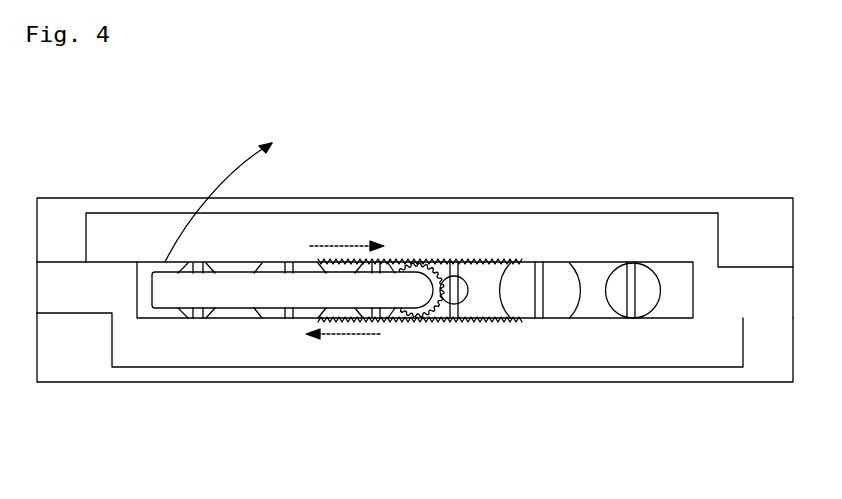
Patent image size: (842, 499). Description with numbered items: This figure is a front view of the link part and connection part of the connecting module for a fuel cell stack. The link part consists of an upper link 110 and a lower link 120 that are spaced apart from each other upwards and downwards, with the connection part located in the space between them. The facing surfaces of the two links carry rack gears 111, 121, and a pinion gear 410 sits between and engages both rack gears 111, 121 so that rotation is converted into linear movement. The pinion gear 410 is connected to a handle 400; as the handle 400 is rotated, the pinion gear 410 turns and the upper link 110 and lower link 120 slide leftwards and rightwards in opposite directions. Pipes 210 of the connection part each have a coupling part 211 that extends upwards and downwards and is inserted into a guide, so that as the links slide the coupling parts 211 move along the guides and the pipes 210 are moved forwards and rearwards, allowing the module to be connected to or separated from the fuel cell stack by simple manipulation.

The upper link 110 is at (420, 235).
The rack gear 111 is at (472, 262).
The lower link 120 is at (307, 350).
The rack gear 121 is at (453, 305).
The pipe 210 is at (553, 303).
The coupling part 211 is at (546, 283).
The handle 400 is at (213, 290).
The pinion gear 410 is at (412, 318).